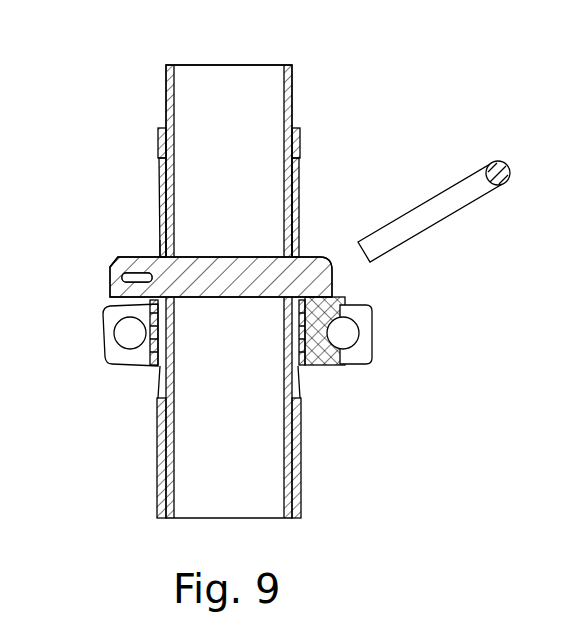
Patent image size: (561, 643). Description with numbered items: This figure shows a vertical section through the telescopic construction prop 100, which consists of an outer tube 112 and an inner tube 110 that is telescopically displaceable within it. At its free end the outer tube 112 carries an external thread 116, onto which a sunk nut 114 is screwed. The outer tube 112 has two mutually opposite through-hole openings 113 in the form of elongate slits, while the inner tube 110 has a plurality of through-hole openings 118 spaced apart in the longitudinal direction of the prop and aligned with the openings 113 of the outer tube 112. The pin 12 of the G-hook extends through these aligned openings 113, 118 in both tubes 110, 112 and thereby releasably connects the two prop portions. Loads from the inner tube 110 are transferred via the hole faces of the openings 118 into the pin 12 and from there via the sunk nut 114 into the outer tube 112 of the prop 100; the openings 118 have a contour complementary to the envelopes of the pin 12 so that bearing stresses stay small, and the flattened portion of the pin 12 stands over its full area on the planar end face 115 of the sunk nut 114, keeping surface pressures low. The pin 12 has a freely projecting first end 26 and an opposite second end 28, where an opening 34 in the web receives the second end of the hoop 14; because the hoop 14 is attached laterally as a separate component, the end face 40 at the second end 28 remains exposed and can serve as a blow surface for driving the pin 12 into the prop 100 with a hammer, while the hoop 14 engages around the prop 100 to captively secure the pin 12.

The inner tube 110 is at (167, 82).
The outer tube 112 is at (158, 135).
The through-hole openings 113 is at (160, 185).
The through-hole openings 118 is at (160, 246).
The pin 12 is at (232, 260).
The first end 26 is at (335, 278).
The opening 34 is at (112, 264).
The second end 28 is at (110, 278).
The end face 40 is at (110, 278).
The external thread 116 is at (304, 364).
The sunk nut 114 is at (340, 366).
The planar end face 115 is at (345, 330).
The hoop 14 is at (447, 205).
The telescopic construction prop 100 is at (338, 281).